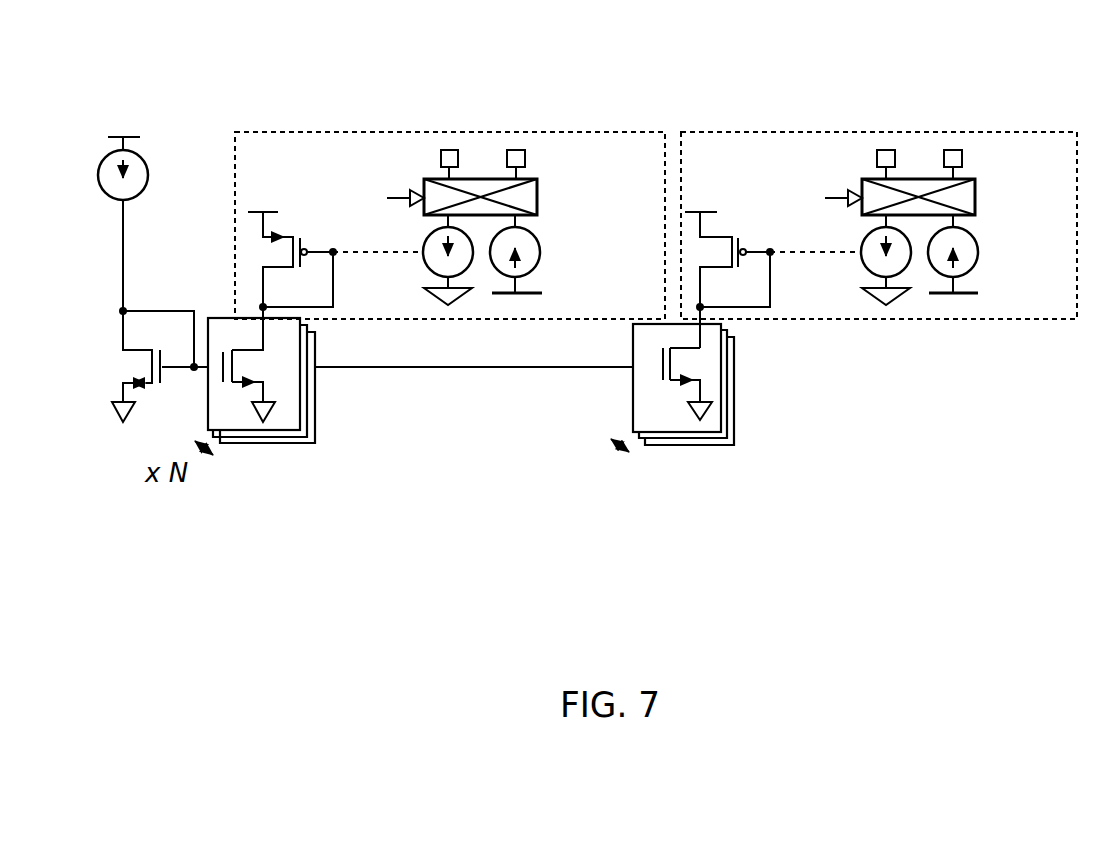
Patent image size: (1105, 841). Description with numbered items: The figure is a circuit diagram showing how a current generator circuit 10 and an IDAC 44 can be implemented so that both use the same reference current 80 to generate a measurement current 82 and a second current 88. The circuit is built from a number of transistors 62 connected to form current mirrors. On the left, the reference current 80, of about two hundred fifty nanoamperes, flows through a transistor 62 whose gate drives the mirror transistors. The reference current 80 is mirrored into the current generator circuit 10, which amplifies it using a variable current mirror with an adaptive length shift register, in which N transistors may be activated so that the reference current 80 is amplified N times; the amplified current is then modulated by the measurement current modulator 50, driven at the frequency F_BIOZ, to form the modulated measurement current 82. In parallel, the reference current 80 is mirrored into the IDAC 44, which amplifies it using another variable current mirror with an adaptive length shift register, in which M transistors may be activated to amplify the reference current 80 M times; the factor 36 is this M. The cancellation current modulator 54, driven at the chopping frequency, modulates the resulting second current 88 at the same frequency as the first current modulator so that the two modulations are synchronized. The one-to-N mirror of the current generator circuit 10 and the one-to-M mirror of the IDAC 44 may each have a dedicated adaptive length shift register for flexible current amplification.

The current generator circuit 10 is at (450, 192).
The IDAC 44 is at (879, 198).
The measurement current modulator 50 is at (531, 178).
The cancellation current modulator 54 is at (964, 178).
The reference current 80 is at (143, 153).
The measurement current 82 is at (465, 269).
The second current 88 is at (905, 268).
The transistors 62 is at (129, 352).
The factor 36 is at (581, 505).